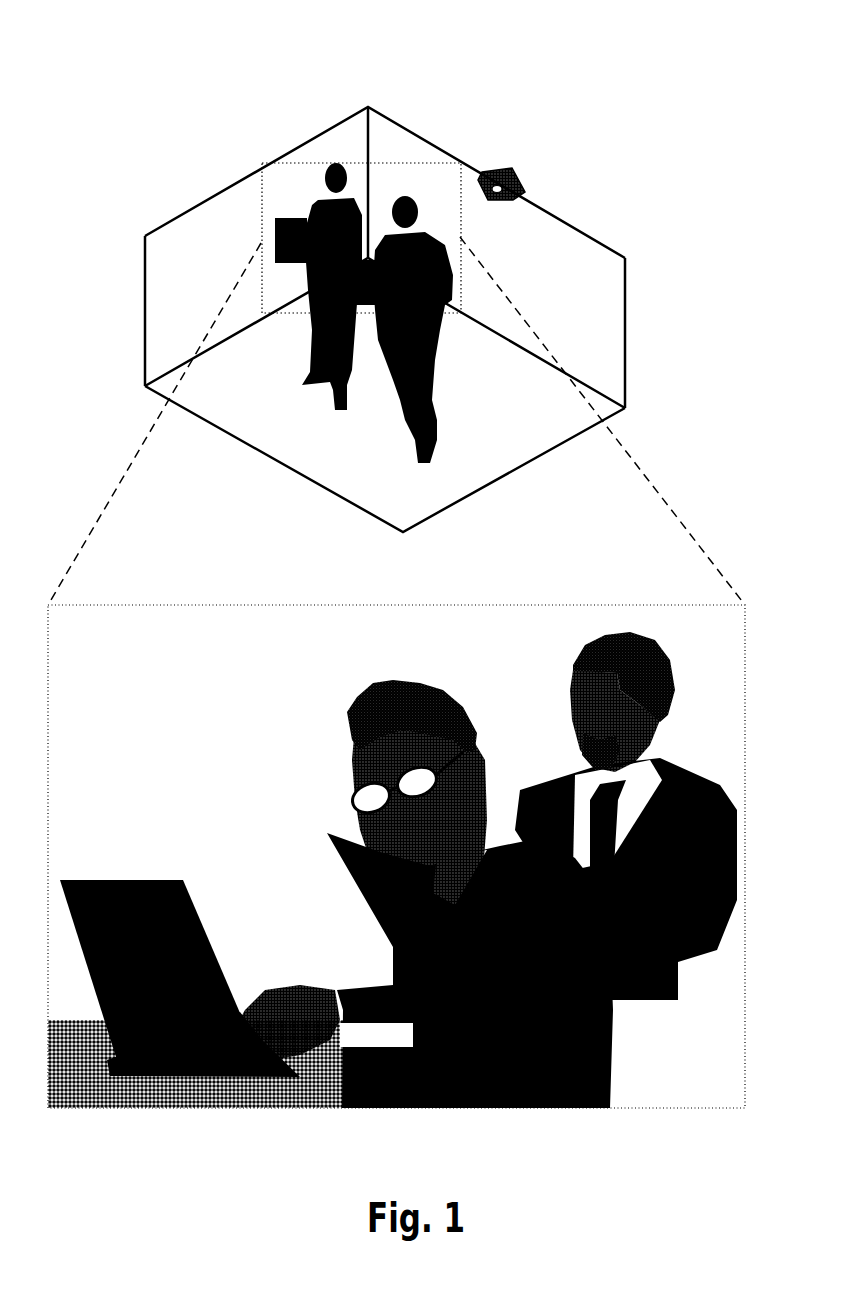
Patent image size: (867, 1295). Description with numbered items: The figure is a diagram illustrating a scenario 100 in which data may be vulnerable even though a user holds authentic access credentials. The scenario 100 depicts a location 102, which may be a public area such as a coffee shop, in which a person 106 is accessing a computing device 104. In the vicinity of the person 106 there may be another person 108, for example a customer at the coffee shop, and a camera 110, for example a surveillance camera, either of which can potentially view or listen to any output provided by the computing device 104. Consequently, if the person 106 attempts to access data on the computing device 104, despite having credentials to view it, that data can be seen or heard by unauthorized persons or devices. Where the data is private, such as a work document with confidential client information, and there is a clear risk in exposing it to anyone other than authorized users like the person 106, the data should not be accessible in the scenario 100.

The scenario 100 is at (402, 32).
The location 102 is at (648, 228).
The computing device 104 is at (165, 900).
The person 106 is at (425, 362).
The person 108 is at (312, 203).
The camera 110 is at (537, 138).